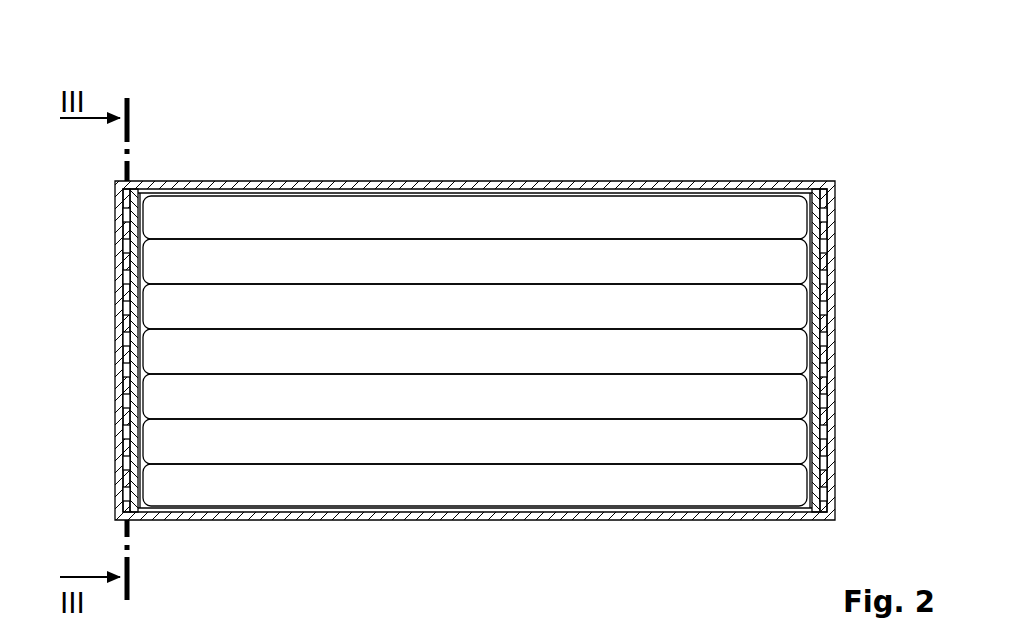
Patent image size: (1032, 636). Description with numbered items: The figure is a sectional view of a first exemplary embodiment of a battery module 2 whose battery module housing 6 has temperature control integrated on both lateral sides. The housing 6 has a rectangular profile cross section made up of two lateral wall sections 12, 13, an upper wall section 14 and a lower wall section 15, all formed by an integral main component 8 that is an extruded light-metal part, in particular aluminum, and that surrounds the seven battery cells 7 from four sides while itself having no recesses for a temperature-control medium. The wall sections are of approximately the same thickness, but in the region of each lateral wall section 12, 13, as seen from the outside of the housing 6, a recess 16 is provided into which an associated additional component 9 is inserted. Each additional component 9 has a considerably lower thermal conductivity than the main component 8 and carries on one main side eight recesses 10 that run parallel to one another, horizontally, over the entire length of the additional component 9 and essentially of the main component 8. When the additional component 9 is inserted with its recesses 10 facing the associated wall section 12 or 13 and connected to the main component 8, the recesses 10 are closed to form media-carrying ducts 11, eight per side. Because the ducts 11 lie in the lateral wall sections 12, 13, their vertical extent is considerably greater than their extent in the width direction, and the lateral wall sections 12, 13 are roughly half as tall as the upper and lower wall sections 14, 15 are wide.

The battery module 2 is at (738, 84).
The battery module housing 6 is at (656, 129).
The battery cells 7 is at (446, 306).
The main component 8 is at (576, 174).
The additional component 9 is at (107, 207).
The recesses 10 is at (118, 208).
The media-carrying ducts 11 is at (475, 323).
The lateral wall section 12 is at (118, 467).
The lateral wall section 13 is at (836, 467).
The upper wall section 14 is at (318, 181).
The lower wall section 15 is at (325, 520).
The recess 16 is at (120, 263).